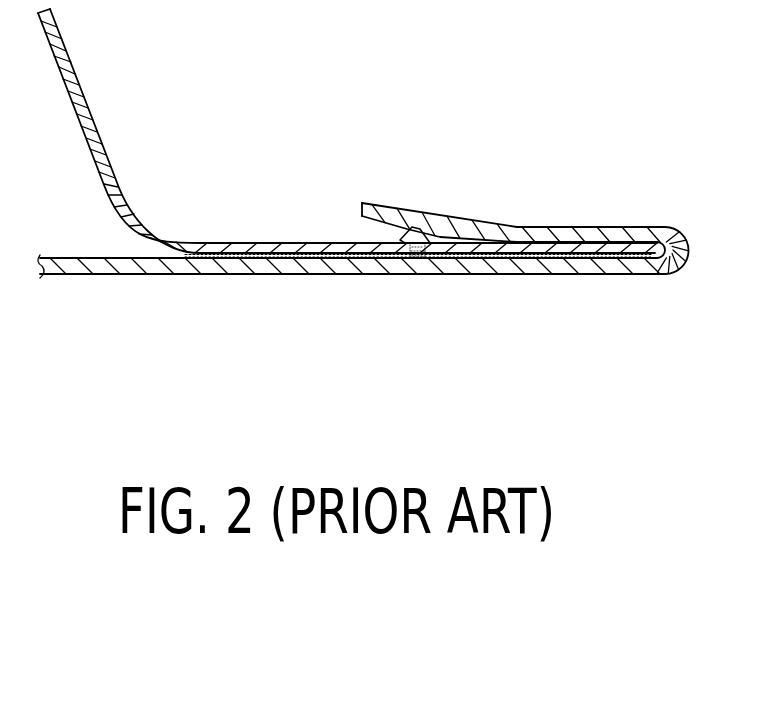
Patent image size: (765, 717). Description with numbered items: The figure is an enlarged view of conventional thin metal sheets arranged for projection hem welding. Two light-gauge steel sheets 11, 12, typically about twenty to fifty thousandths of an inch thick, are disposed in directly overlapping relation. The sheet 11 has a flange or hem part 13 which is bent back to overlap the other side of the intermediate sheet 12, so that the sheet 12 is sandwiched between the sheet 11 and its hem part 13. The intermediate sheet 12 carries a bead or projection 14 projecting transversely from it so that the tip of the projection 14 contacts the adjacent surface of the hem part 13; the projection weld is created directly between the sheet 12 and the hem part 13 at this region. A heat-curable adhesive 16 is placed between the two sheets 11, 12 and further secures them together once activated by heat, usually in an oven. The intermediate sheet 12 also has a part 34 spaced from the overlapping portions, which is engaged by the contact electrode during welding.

The sheet 11 is at (330, 265).
The intermediate sheet 12 is at (276, 243).
The hem part 13 is at (550, 230).
The projection 14 is at (405, 236).
The adhesive 16 is at (222, 258).
The part of intermediate sheet 34 is at (63, 33).